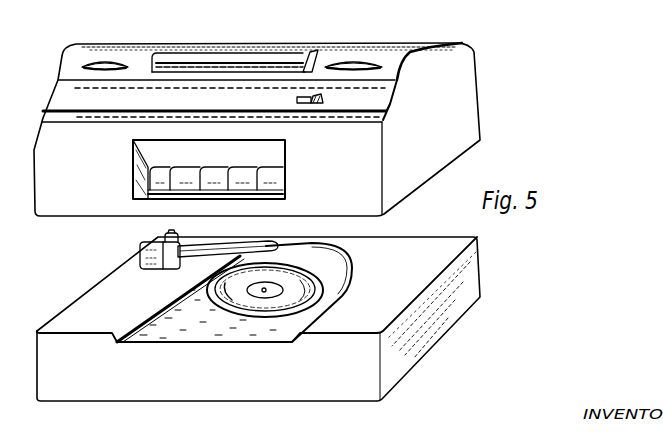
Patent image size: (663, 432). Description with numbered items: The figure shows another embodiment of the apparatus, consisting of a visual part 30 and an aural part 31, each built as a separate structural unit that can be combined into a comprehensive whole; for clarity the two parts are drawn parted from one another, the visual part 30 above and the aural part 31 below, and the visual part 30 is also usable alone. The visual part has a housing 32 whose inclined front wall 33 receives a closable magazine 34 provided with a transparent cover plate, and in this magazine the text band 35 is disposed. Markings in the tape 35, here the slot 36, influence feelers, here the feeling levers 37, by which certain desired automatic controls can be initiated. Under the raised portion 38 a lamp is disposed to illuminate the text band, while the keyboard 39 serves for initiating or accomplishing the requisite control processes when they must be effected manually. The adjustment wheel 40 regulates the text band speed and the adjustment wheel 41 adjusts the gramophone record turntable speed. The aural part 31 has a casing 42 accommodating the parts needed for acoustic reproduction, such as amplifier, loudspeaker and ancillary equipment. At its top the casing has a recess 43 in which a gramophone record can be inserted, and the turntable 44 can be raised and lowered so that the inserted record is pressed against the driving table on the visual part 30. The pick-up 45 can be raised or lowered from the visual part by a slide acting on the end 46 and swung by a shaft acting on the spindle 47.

The visual part 30 is at (478, 73).
The aural part 31 is at (481, 256).
The housing 32 is at (455, 53).
The inclined front wall 33 is at (396, 73).
The closable magazine 34 is at (390, 98).
The text band 35 is at (232, 88).
The slot 36 is at (300, 97).
The feeling levers 37 is at (315, 97).
The raised portion 38 is at (193, 58).
The keyboard 39 is at (148, 182).
The adjustment wheel 40 is at (110, 64).
The adjustment wheel 41 is at (353, 62).
The casing 42 is at (440, 321).
The recess 43 is at (168, 342).
The turntable 44 is at (243, 298).
The pick-up 45 is at (193, 258).
The end 46 is at (145, 253).
The spindle 47 is at (165, 238).